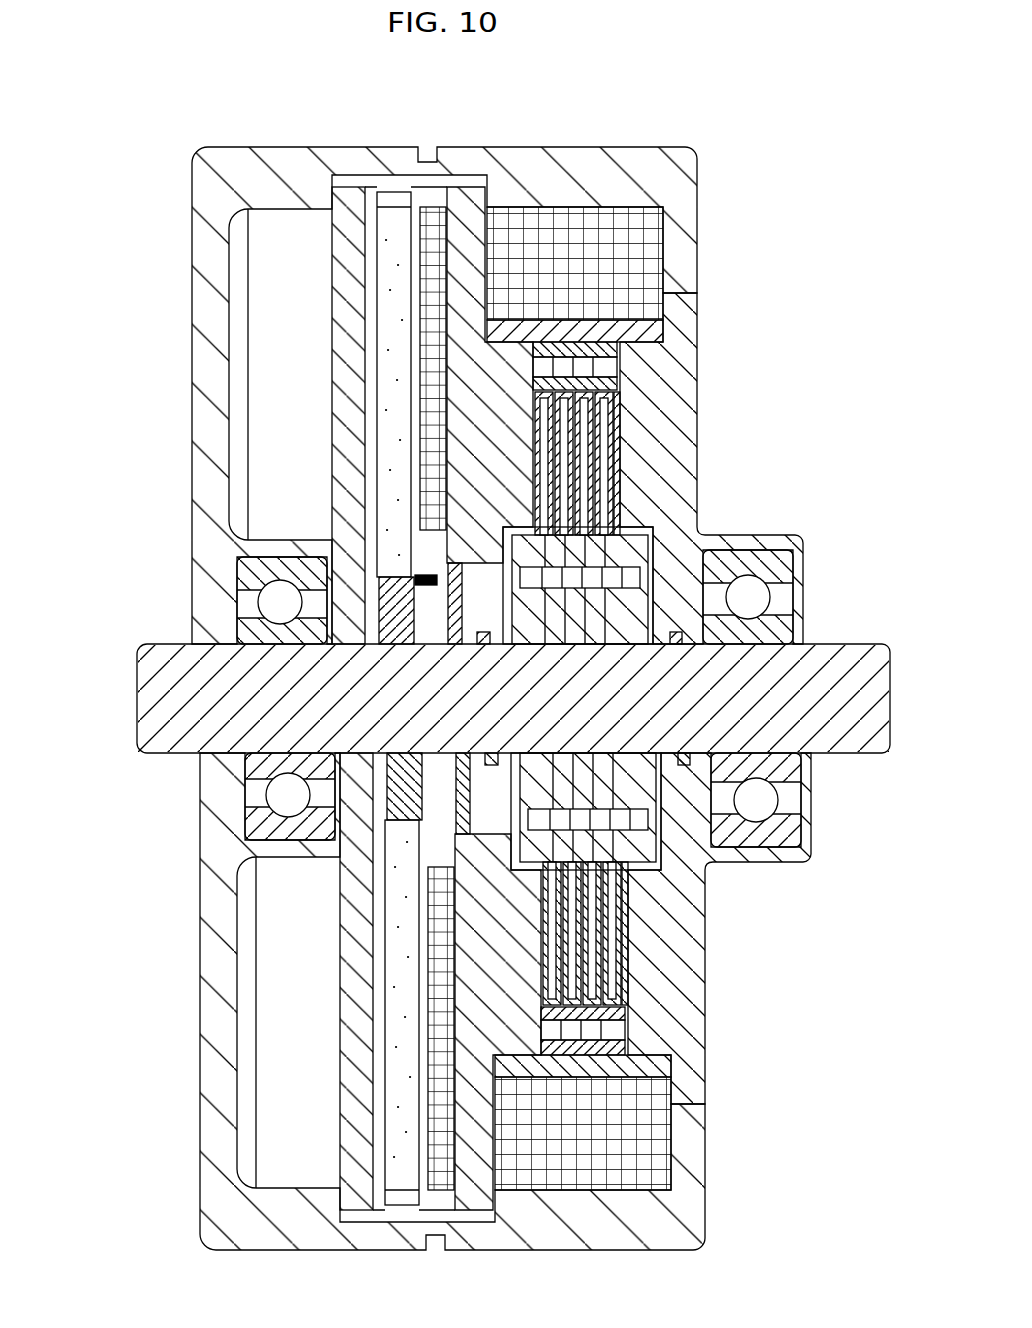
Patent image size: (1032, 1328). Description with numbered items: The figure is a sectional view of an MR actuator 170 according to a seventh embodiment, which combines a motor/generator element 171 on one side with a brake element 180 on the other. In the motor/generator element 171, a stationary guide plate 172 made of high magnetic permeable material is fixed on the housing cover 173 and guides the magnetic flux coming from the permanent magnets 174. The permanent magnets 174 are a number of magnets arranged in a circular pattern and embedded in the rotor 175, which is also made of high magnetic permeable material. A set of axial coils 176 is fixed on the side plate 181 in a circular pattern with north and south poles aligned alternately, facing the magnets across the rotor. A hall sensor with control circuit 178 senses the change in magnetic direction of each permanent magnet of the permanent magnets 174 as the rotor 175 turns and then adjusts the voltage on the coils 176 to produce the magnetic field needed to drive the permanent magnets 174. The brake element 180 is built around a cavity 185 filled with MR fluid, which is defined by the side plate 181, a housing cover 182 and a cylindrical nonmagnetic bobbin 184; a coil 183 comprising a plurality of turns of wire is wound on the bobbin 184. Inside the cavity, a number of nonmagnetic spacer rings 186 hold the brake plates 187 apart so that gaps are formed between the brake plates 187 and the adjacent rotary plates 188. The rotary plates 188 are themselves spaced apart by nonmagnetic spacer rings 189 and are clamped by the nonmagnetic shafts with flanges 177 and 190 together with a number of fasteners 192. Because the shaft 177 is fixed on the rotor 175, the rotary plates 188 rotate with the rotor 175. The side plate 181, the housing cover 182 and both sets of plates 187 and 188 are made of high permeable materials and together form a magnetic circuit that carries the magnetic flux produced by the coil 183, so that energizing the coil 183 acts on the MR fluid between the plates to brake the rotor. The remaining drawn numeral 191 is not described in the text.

The MR actuator 170 is at (747, 142).
The motor/generator element 171 is at (378, 185).
The stationary guide plate 172 is at (340, 272).
The housing cover 173 is at (203, 195).
The permanent magnets 174 is at (388, 338).
The rotor 175 is at (397, 609).
The axial coils 176 is at (432, 388).
The nonmagnetic shaft with flange 177 is at (282, 706).
The hall sensor with control circuit 178 is at (420, 577).
The brake element 180 is at (617, 405).
The side plate 181 is at (500, 475).
The housing cover 182 is at (663, 918).
The coil 183 is at (630, 1133).
The cylindrical nonmagnetic bobbin 184 is at (635, 1065).
The cavity 185 is at (652, 855).
The nonmagnetic spacer rings 186 is at (625, 1015).
The brake plates 187 is at (598, 424).
The rotary plates 188 is at (613, 522).
The nonmagnetic spacer rings 189 is at (600, 597).
The nonmagnetic shaft with flange 190 is at (752, 720).
The spring 191 is at (605, 360).
The fasteners 192 is at (650, 820).